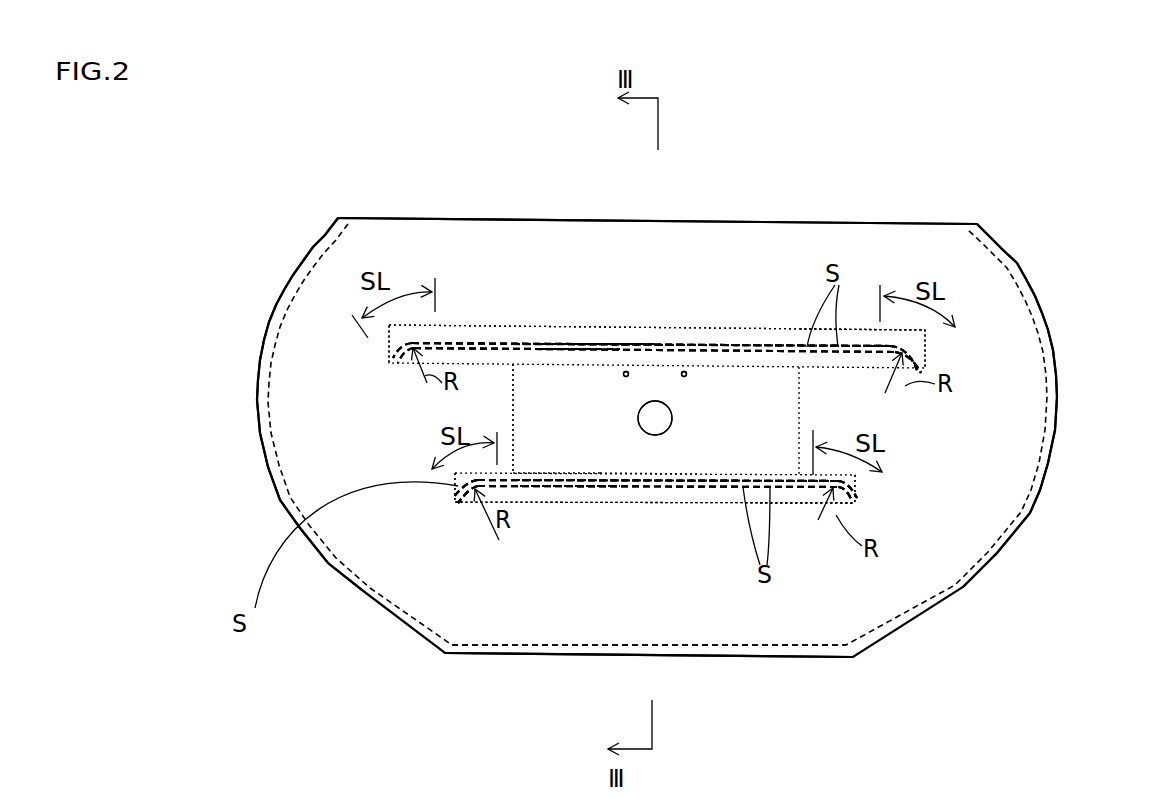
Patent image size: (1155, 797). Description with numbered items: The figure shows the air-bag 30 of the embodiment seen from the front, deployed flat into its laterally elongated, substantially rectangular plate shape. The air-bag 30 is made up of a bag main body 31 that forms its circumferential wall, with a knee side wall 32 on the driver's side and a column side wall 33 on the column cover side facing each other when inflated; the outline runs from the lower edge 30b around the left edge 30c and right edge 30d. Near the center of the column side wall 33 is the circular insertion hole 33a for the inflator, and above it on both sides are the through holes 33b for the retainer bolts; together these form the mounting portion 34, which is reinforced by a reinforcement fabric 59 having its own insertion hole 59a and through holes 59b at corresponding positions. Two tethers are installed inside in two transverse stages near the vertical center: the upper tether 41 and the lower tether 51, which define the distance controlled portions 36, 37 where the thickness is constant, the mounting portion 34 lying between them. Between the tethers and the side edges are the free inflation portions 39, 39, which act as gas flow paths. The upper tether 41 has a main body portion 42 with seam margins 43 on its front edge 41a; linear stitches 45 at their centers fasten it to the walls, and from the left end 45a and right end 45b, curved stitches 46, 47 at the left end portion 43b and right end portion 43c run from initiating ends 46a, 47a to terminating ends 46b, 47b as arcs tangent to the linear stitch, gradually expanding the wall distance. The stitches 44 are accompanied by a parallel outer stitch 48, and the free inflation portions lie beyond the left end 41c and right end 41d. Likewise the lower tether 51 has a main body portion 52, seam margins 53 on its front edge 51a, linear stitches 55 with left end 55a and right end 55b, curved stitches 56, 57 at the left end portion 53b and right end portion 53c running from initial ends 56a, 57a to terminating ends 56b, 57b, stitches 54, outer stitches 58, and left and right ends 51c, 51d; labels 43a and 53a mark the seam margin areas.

The air-bag 30 is at (293, 162).
The lower edge 30b is at (530, 660).
The left edge 30c is at (1052, 398).
The right edge 30d is at (261, 427).
The bag main body 31 is at (290, 368).
The knee side wall 32 is at (367, 235).
The column side wall 33 is at (449, 573).
The insertion hole 33a is at (748, 452).
The through holes 33b is at (684, 371).
The mounting portion 34 is at (587, 478).
The distance controlled portion 36 is at (578, 333).
The distance controlled portion 37 is at (567, 471).
The free inflation portions 39 is at (328, 460).
The upper tether 41 is at (744, 326).
The front edge 41a is at (699, 327).
The left end 41c is at (934, 345).
The right end 41d is at (358, 332).
The main body portion 42 is at (771, 311).
The seam margins 43 is at (653, 242).
The front slit center 43a is at (610, 329).
The left end portion 43b is at (925, 402).
The right end portion 43c is at (437, 401).
The stitches 44 is at (553, 148).
The linear stitches 45 is at (502, 336).
The left end 45a is at (893, 347).
The right end 45b is at (432, 340).
The curved stitch 46 is at (906, 333).
The initiating end 46a is at (893, 300).
The terminating end 46b is at (932, 363).
The curved stitch 47 is at (410, 336).
The initiating end 47a is at (444, 300).
The terminating end 47b is at (392, 352).
The outer stitch 48 is at (746, 354).
The lower tether 51 is at (698, 513).
The front edge 51a is at (668, 505).
The left end 51c is at (898, 471).
The right end 51d is at (442, 493).
The main body portion 52 is at (660, 468).
The seam margins 53 is at (555, 501).
The rear slit center 53a is at (539, 559).
The left end portion 53b is at (858, 528).
The right end portion 53c is at (507, 548).
The stitches 54 is at (595, 608).
The linear stitches 55 is at (624, 483).
The left end 55a is at (833, 356).
The right end 55b is at (517, 470).
The curved stitch 56 is at (866, 502).
The initial end 56a is at (808, 445).
The terminating end 56b is at (855, 487).
The curved stitch 57 is at (363, 548).
The initial end 57a is at (506, 446).
The terminating end 57b is at (452, 497).
The outer stitches 58 is at (713, 490).
The reinforcement fabric 59 is at (783, 505).
The insertion hole 59a is at (706, 439).
The through holes 59b is at (655, 326).